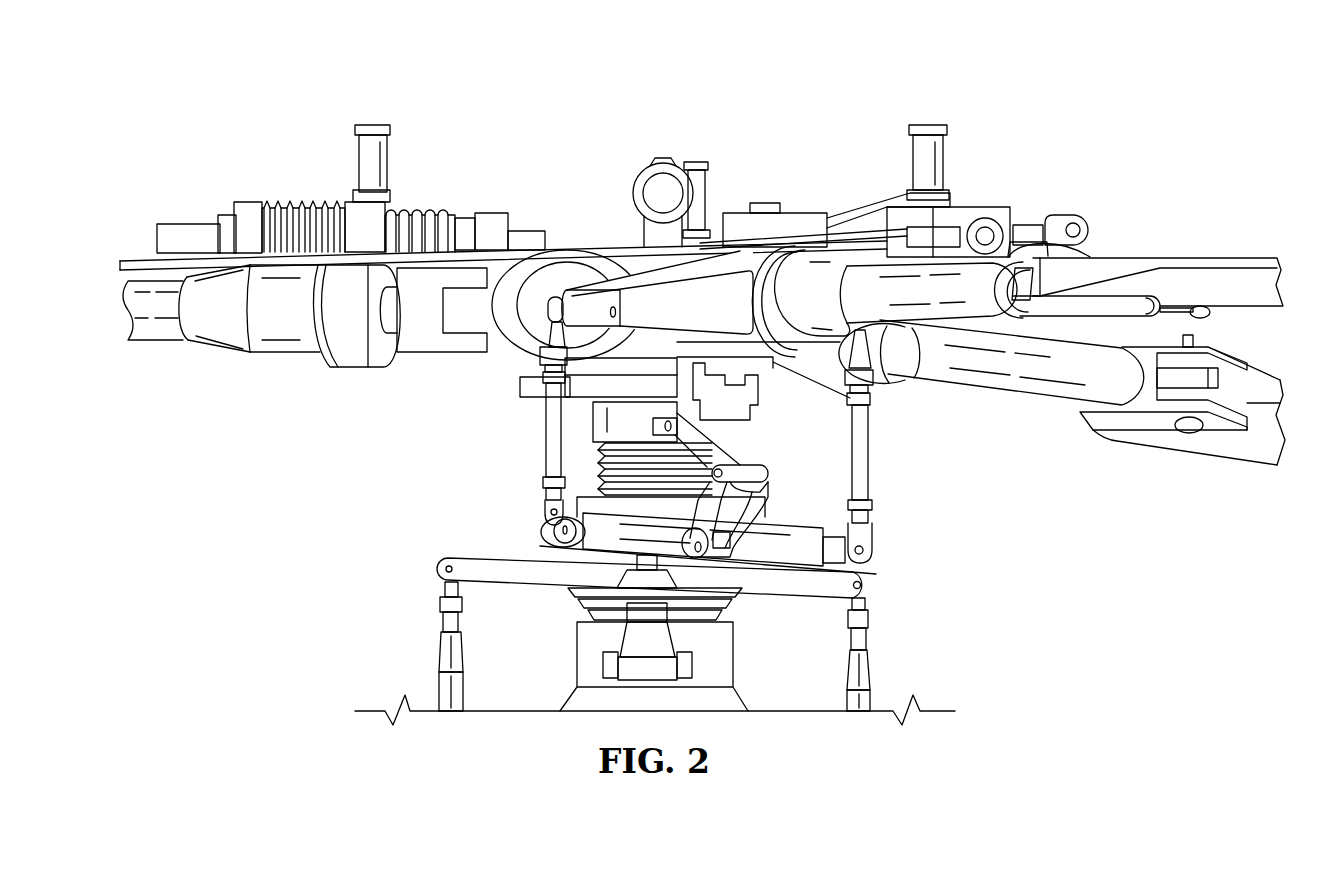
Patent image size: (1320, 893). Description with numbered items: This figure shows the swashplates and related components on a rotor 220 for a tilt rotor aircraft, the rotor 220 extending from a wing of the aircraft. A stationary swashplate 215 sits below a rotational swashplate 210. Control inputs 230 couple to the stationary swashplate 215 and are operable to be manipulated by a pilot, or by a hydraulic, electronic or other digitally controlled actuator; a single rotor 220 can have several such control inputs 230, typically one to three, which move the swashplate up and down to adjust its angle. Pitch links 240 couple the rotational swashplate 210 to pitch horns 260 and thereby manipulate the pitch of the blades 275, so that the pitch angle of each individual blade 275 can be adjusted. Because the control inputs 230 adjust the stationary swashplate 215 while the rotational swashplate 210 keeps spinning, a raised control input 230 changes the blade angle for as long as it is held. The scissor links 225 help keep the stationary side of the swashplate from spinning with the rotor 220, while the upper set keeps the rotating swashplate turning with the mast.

The rotor 220 is at (447, 85).
The pitch horns 260 is at (628, 280).
The blades 275 is at (150, 341).
The pitch links 240 is at (545, 441).
The scissor links 225 is at (742, 455).
The rotational swashplate 210 is at (792, 523).
The stationary swashplate 215 is at (777, 597).
The control inputs 230 is at (438, 657).